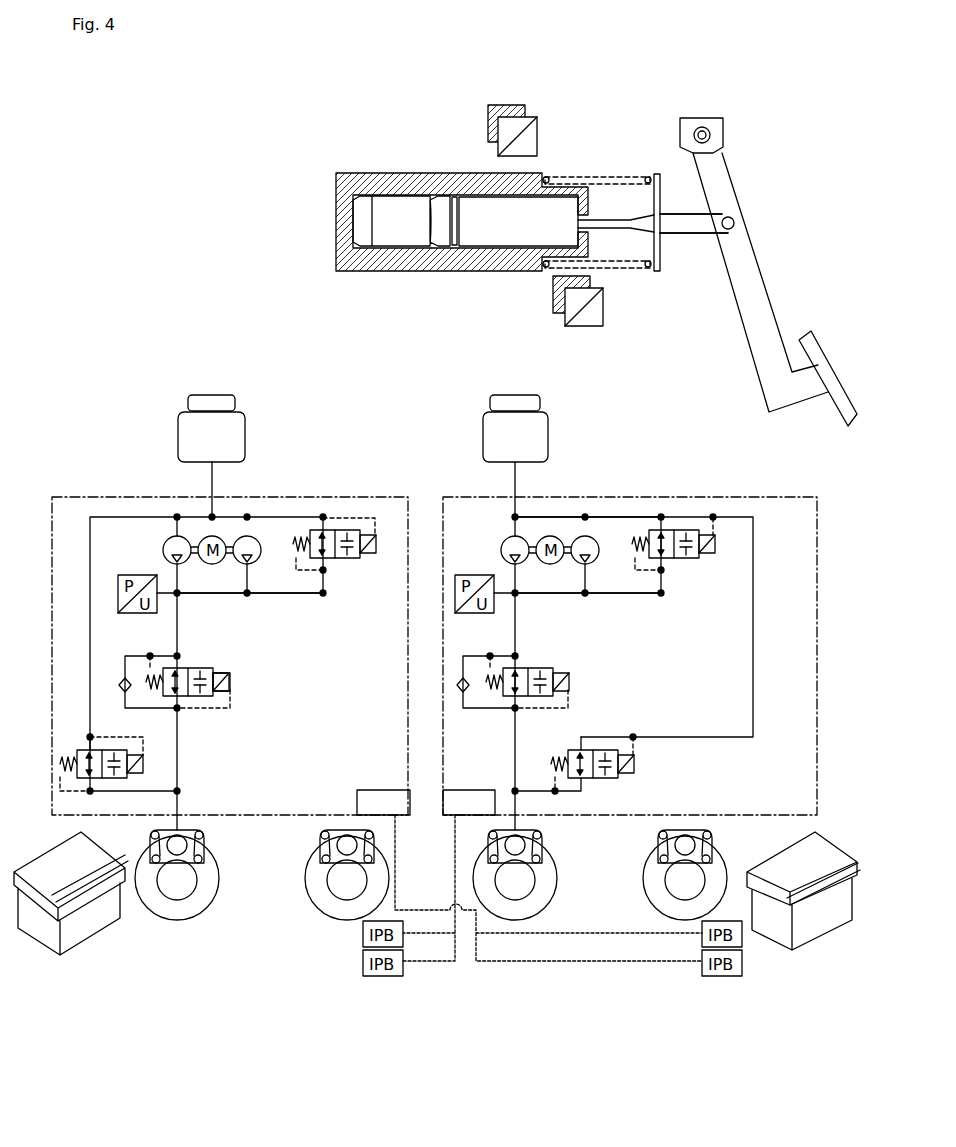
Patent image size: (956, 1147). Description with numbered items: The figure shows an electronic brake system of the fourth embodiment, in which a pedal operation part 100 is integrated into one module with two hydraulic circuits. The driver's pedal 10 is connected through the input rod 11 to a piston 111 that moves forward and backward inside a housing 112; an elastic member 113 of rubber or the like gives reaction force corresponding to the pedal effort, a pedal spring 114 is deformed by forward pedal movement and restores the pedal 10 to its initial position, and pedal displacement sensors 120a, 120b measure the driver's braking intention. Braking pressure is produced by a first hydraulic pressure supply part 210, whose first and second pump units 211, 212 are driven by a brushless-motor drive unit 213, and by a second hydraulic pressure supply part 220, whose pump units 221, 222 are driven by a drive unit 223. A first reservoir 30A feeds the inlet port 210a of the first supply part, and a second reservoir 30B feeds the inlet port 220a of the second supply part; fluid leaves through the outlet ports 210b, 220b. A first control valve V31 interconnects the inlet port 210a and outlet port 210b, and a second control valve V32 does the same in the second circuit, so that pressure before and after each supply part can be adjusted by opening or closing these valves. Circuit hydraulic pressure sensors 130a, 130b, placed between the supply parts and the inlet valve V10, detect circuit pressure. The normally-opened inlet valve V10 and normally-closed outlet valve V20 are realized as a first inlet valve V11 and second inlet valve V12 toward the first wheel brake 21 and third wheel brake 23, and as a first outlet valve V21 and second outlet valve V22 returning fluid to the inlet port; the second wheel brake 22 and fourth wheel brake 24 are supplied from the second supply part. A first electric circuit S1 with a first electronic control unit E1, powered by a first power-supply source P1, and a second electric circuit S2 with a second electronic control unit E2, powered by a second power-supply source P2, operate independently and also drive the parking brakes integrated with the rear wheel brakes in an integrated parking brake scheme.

The pedal operation part 100 is at (362, 162).
The piston 111 is at (493, 240).
The housing 112 is at (365, 272).
The elastic member 113 is at (355, 225).
The pedal spring 114 is at (613, 178).
The pedal displacement sensor 120a is at (604, 298).
The pedal displacement sensor 120b is at (505, 104).
The pedal 10 is at (760, 262).
The input rod 11 is at (690, 234).
The first electric circuit S1 is at (84, 497).
The second electric circuit S2 is at (745, 497).
The outlet valve V20 is at (62, 800).
The first reservoir 30A is at (212, 396).
The second reservoir 30B is at (515, 396).
The first hydraulic pressure supply part 210 is at (157, 550).
The first pump unit 211 is at (170, 534).
The second pump unit 212 is at (245, 534).
The drive unit 213 is at (200, 534).
The inlet port 210a is at (250, 514).
The outlet port 210b is at (247, 596).
The first control valve V31 is at (338, 529).
The first-circuit hydraulic pressure sensor 130a is at (135, 615).
The inlet valve V10 is at (196, 660).
The first inlet valve V11 is at (232, 686).
The first outlet valve V21 is at (133, 780).
The first electronic control unit E1 is at (384, 789).
The first wheel brake 21 is at (215, 882).
The third wheel brake 23 is at (315, 864).
The first power-supply source P1 is at (94, 938).
The second hydraulic pressure supply part 220 is at (508, 530).
The first pump unit 221 is at (500, 549).
The second pump unit 222 is at (590, 534).
The drive unit 223 is at (553, 534).
The inlet port 220a is at (518, 516).
The outlet port 220b is at (518, 597).
The second control valve V32 is at (677, 529).
The second-circuit hydraulic pressure sensor 130b is at (474, 615).
The second inlet valve V12 is at (571, 686).
The second outlet valve V22 is at (625, 780).
The second electronic control unit E2 is at (466, 789).
The second wheel brake 22 is at (553, 884).
The fourth wheel brake 24 is at (655, 864).
The second power-supply source P2 is at (826, 928).